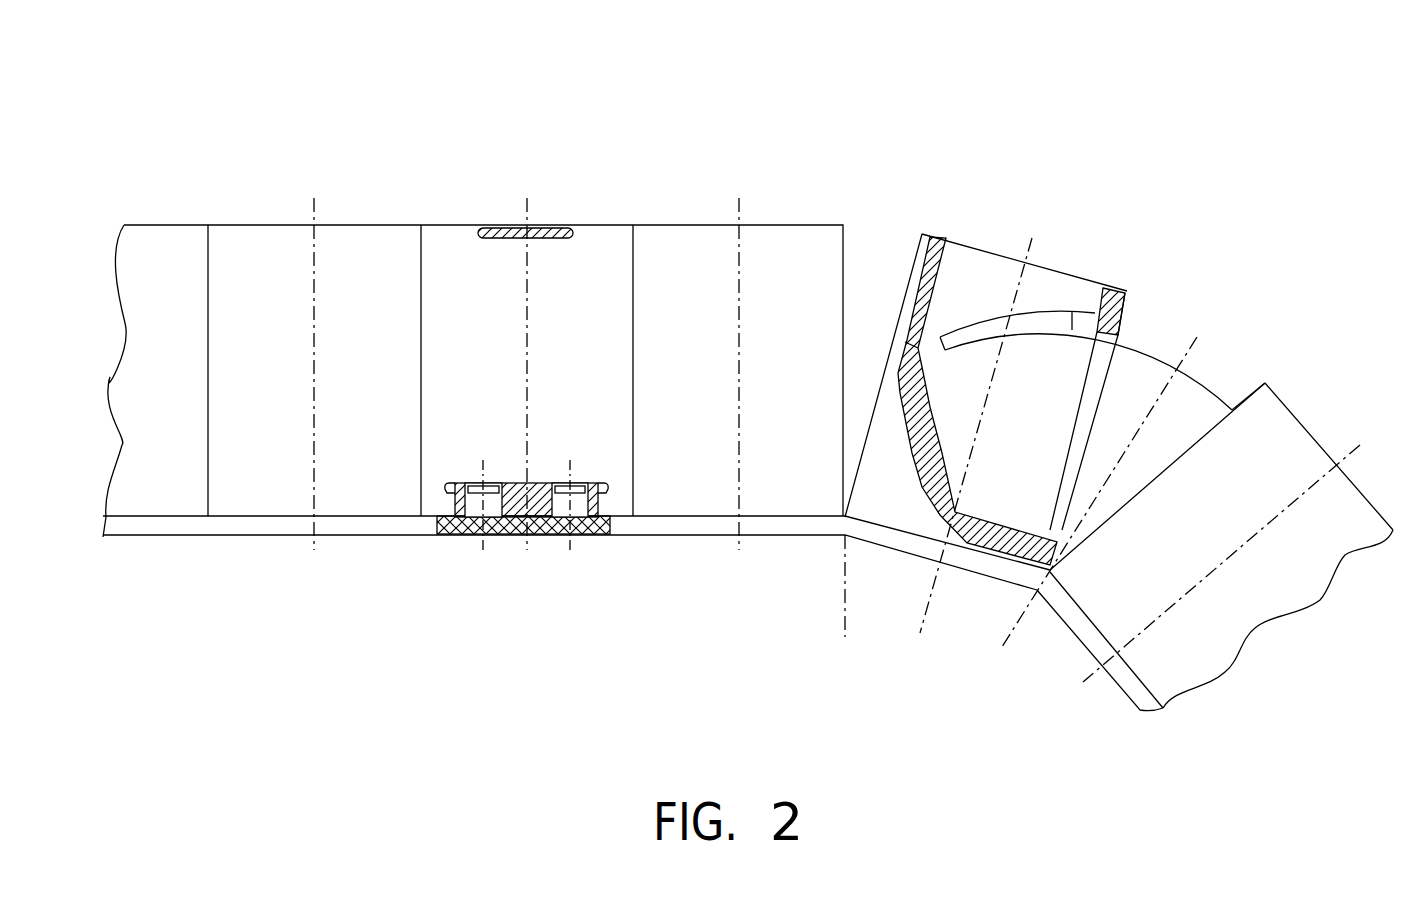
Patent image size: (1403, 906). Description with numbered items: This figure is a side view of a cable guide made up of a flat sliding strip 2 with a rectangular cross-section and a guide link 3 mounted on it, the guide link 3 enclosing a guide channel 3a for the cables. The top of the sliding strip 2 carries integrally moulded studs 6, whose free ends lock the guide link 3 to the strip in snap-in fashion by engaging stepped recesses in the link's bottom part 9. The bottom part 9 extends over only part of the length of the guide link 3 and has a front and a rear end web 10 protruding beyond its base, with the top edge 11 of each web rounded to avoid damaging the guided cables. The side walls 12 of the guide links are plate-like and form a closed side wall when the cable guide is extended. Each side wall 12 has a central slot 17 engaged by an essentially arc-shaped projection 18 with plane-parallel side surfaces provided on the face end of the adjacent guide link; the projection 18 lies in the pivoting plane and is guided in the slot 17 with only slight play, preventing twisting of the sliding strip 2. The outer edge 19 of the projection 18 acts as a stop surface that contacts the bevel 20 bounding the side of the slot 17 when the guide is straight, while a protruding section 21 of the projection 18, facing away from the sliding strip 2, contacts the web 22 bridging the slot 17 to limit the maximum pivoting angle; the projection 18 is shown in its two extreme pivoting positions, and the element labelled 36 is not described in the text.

The sliding strip 2 is at (362, 525).
The guide link 3 is at (1306, 378).
The guide channel 3a is at (1258, 362).
The studs 6 is at (472, 510).
The bottom part 9 is at (500, 483).
The end web 10 is at (458, 483).
The top edge 11 is at (446, 485).
The side walls 12 is at (610, 260).
The central slot 17 is at (1125, 342).
The projection 18 is at (1138, 397).
The outer edge 19 is at (1043, 400).
The bevel 20 is at (948, 380).
The protruding section 21 is at (1087, 325).
The web 22 is at (1116, 378).
The funnel 36 is at (936, 216).